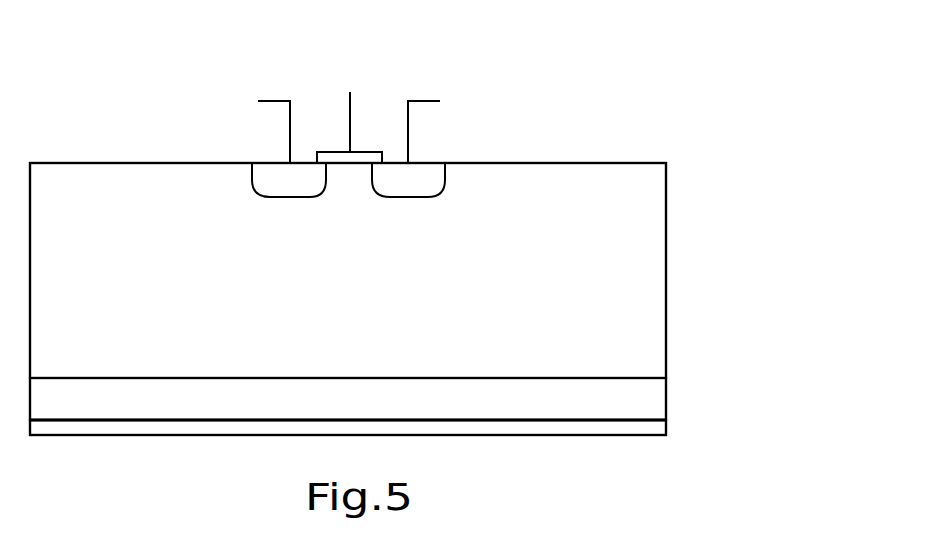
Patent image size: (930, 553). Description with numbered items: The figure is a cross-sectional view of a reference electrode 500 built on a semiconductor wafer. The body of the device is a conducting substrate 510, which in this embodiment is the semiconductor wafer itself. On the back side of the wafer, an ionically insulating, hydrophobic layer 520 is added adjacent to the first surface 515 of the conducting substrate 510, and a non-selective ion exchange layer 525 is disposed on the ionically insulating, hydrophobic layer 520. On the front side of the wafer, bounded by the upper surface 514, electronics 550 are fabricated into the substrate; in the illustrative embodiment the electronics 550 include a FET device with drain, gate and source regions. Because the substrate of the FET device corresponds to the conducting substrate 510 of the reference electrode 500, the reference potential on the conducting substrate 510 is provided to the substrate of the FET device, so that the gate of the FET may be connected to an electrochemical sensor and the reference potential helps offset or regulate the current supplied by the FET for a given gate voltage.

The reference electrode 500 is at (675, 276).
The conducting substrate 510 is at (360, 313).
The top surface 514 is at (535, 163).
The first surface 515 is at (433, 378).
The ionically insulating, hydrophobic layer 520 is at (650, 393).
The non-selective ion exchange layer 525 is at (650, 430).
The electronics 550 is at (267, 70).